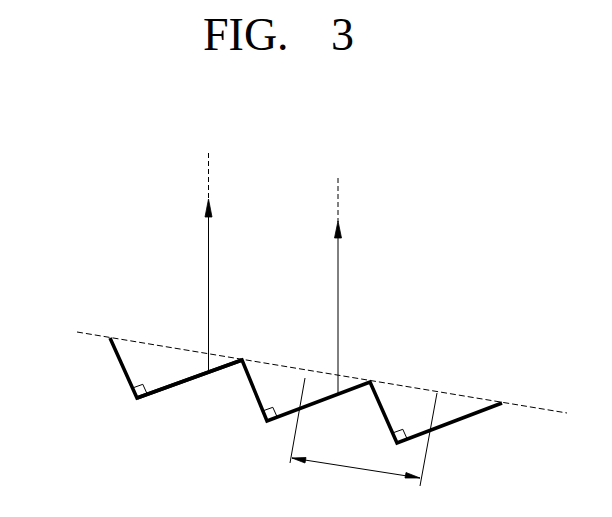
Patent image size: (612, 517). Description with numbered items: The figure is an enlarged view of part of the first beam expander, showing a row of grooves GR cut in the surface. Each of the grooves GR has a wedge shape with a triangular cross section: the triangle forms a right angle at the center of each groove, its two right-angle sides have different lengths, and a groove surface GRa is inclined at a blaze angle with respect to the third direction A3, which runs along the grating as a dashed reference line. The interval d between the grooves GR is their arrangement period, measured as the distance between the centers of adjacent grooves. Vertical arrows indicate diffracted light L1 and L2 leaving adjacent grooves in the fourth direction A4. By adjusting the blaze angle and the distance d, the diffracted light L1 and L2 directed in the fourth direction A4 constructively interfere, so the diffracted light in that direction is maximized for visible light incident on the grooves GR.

The third direction A3 is at (306, 365).
The fourth direction A4 is at (291, 187).
The diffracted light L1 is at (222, 286).
The diffracted light L2 is at (352, 307).
The grooves GR is at (153, 360).
The groove surface GRa is at (168, 385).
The interval between the grooves d is at (363, 432).